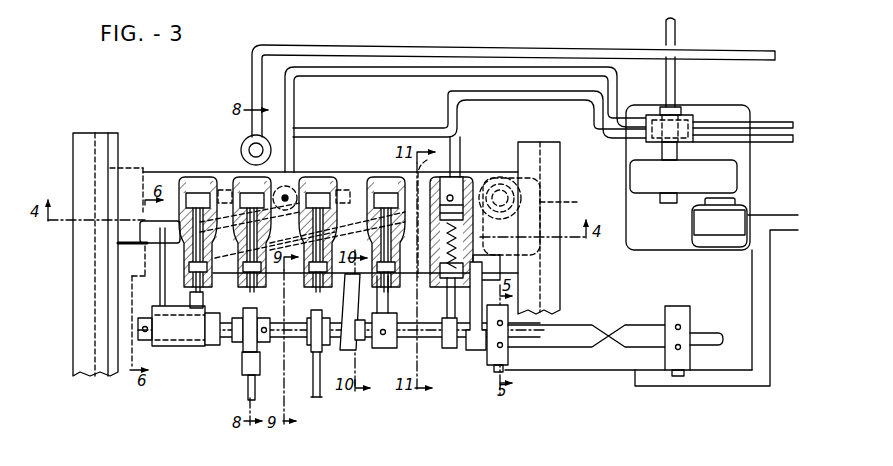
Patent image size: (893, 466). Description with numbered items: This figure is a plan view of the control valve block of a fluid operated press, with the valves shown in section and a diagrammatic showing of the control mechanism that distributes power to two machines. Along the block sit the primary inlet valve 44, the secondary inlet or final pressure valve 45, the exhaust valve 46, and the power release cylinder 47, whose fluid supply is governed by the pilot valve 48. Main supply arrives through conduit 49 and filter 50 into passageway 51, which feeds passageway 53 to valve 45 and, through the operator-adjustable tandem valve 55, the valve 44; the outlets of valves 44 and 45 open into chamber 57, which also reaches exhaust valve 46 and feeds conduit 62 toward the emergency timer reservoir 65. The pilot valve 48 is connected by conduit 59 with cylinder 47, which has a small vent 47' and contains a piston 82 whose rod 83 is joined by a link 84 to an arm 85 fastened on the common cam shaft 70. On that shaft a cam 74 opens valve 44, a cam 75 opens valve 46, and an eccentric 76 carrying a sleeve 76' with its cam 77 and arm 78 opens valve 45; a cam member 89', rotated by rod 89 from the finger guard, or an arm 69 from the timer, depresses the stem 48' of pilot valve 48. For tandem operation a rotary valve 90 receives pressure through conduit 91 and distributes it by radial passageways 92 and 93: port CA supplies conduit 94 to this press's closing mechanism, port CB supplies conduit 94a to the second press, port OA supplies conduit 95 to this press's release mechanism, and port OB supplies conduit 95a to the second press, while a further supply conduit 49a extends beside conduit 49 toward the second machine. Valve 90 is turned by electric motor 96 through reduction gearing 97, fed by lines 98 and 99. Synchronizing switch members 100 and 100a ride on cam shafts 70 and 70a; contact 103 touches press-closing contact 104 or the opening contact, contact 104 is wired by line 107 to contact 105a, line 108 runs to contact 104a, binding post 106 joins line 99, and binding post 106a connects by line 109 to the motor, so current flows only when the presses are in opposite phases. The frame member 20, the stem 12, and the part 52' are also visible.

The valve stem 12 is at (320, 396).
The frame member 20 is at (561, 266).
The primary inlet valve 44 is at (332, 178).
The secondary inlet valve 45 is at (190, 200).
The exhaust valve 46 is at (370, 178).
The power release cylinder 47 is at (470, 215).
The vent 47' is at (472, 140).
The pilot valve 48 is at (229, 208).
The stem 48' is at (269, 306).
The conduit 49 is at (370, 44).
The conduit 49a is at (753, 51).
The filter 50 is at (272, 143).
The passageway 51 is at (275, 168).
The cam 52' is at (304, 170).
The passageway 53 is at (232, 215).
The tandem valve 55 is at (327, 152).
The chamber 57 is at (327, 205).
The conduit 59 is at (432, 216).
The conduit 62 is at (408, 134).
The reservoir 65 is at (570, 205).
The arm 69 is at (248, 316).
The cam shaft 70 is at (433, 340).
The cam shaft 70a is at (711, 335).
The cam 74 is at (310, 316).
The cam 75 is at (387, 310).
The eccentric 76 is at (171, 361).
The sleeve 76' is at (153, 382).
The cam 77 is at (192, 298).
The arm 78 is at (160, 288).
The piston 82 is at (467, 218).
The rod 83 is at (486, 267).
The link 84 is at (452, 305).
The arm 85 is at (470, 350).
The rod 89 is at (232, 387).
The cam member 89' is at (229, 344).
The rotary valve 90 is at (678, 124).
The conduit 91 is at (676, 76).
The radial passageway 92 is at (655, 116).
The radial passageway 93 is at (680, 153).
The conduit 94 is at (545, 70).
The conduit 94a is at (772, 122).
The conduit 95 is at (560, 100).
The conduit 95a is at (778, 143).
The electric motor 96 is at (719, 222).
The reduction gearing 97 is at (683, 181).
The line 98 is at (785, 215).
The line 99 is at (789, 232).
The switch member 100 is at (510, 336).
The switch member 100a is at (672, 337).
The contact 103 is at (503, 323).
The press-closing contact 104 is at (503, 346).
The press-closing contact 104a is at (675, 348).
The press-opening contact 105a is at (675, 326).
The binding post 106 is at (503, 370).
The binding post 106a is at (678, 378).
The line 107 is at (578, 350).
The line 108 is at (577, 325).
The line 109 is at (750, 263).
The port CA is at (644, 131).
The port OA is at (644, 139).
The port CB is at (703, 122).
The port OB is at (703, 133).